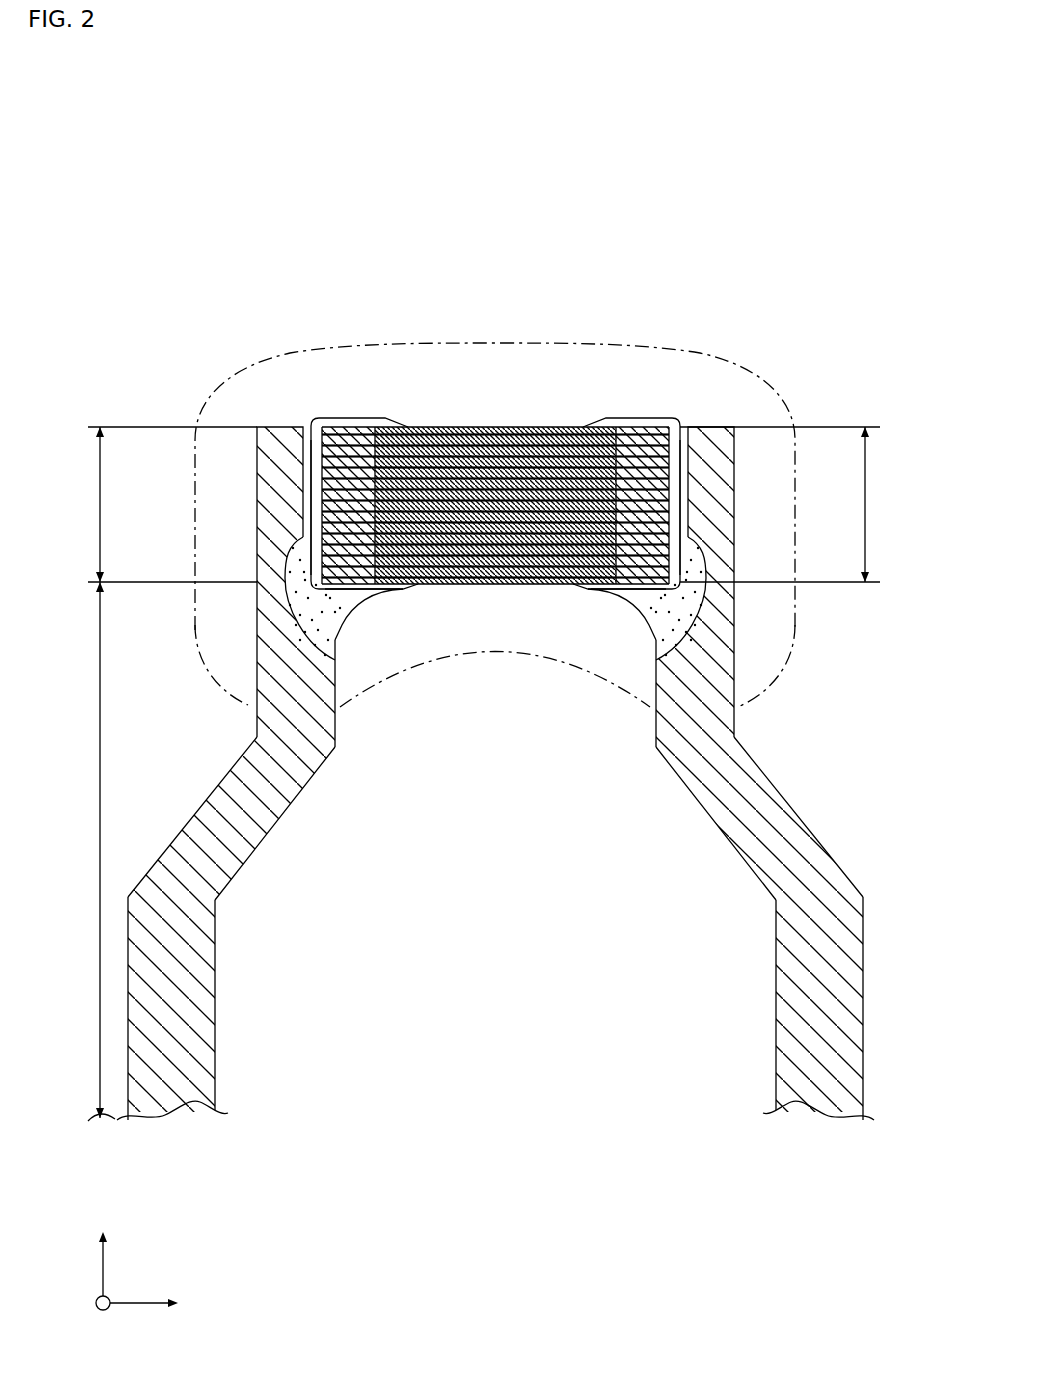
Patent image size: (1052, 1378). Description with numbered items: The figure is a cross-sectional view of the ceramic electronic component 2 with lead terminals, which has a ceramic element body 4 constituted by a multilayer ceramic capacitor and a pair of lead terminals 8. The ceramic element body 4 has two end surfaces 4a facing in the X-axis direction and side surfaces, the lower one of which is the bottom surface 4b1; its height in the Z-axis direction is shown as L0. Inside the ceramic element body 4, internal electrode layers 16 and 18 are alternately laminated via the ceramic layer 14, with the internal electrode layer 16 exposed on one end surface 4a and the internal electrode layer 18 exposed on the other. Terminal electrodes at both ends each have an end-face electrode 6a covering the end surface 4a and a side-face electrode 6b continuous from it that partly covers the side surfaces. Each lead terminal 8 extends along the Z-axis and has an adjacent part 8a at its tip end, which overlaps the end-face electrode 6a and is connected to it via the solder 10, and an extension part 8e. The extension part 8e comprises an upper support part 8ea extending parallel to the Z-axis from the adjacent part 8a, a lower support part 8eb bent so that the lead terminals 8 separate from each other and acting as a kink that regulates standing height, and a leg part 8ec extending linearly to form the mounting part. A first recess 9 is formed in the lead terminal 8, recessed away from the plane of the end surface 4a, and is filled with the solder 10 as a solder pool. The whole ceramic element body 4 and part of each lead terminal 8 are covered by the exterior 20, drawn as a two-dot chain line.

The ceramic electronic component 2 is at (813, 260).
The ceramic element body 4 is at (558, 418).
The end surface 4a is at (308, 453).
The bottom surface 4b1 is at (495, 587).
The end-face electrode 6a is at (314, 508).
The side-face electrode 6b is at (355, 590).
The lead terminal 8 is at (817, 818).
The adjacent part 8a is at (157, 504).
The extension part 8e is at (86, 851).
The upper support part 8ea is at (275, 680).
The lower support part 8eb is at (282, 793).
The leg part 8ec is at (193, 996).
The first recess 9 is at (282, 602).
The solder 10 is at (330, 613).
The ceramic layer 14 is at (362, 434).
The internal electrode layer 16 is at (351, 430).
The internal electrode layer 18 is at (651, 437).
The exterior 20 is at (513, 343).
The height of the ceramic element body L0 is at (794, 504).